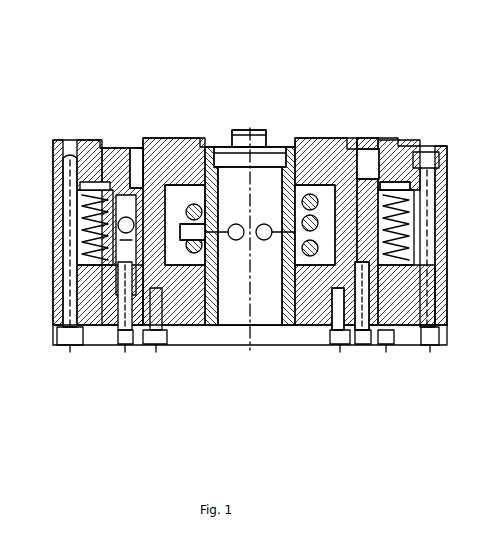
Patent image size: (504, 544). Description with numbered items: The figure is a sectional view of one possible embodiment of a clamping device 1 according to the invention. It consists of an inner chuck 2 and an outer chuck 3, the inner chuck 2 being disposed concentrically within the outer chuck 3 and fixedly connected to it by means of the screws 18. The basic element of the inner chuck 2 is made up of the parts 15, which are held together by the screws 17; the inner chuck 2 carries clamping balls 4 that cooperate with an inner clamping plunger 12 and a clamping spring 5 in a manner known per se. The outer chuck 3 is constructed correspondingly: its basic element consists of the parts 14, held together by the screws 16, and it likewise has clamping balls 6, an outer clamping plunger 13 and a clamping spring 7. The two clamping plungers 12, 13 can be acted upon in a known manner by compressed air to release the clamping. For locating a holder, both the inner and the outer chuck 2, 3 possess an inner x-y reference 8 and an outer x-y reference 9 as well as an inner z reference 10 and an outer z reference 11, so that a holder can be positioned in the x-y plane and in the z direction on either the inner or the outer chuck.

The clamping device 1 is at (122, 108).
The inner chuck 2 is at (345, 125).
The outer chuck 3 is at (420, 122).
The clamping balls 4 is at (210, 138).
The clamping spring 5 is at (382, 188).
The clamping balls 6 is at (84, 138).
The clamping spring 7 is at (385, 218).
The inner x-y reference 8 is at (308, 138).
The outer x-y reference 9 is at (73, 138).
The inner z reference 10 is at (322, 138).
The outer z reference 11 is at (376, 138).
The inner clamping plunger 12 is at (385, 280).
The outer clamping plunger 13 is at (97, 347).
The parts 14 is at (55, 178).
The parts 15 is at (350, 347).
The screws 16 is at (65, 347).
The screws 17 is at (348, 347).
The screws 18 is at (126, 347).